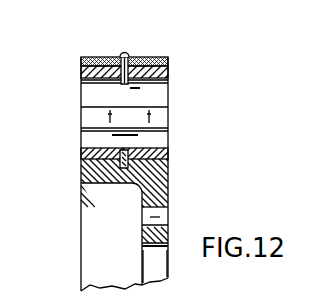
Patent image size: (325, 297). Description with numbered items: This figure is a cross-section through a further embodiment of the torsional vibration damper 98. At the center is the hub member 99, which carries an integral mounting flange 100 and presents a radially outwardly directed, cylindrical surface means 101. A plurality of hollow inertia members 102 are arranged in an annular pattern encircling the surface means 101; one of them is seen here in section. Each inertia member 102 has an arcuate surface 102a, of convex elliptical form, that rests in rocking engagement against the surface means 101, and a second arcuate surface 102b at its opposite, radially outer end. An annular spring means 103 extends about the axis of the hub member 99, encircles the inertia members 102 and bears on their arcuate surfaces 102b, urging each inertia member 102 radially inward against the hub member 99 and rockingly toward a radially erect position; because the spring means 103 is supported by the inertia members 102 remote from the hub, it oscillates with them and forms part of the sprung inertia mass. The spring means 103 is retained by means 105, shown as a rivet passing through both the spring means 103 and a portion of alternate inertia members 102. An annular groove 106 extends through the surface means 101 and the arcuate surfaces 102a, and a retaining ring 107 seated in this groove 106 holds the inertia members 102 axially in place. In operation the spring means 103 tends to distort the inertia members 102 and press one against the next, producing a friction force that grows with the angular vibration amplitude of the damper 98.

The torsional vibration damper 98 is at (72, 237).
The hub member 99 is at (168, 197).
The mounting flange 100 is at (168, 243).
The surface means 101 is at (128, 144).
The inertia members 102 is at (167, 100).
The arcuate surface 102a is at (88, 166).
The second arcuate surface 102b is at (97, 58).
The annular spring means 103 is at (168, 63).
The retaining means 105 is at (127, 54).
The annular groove 106 is at (168, 173).
The retaining ring 107 is at (168, 131).